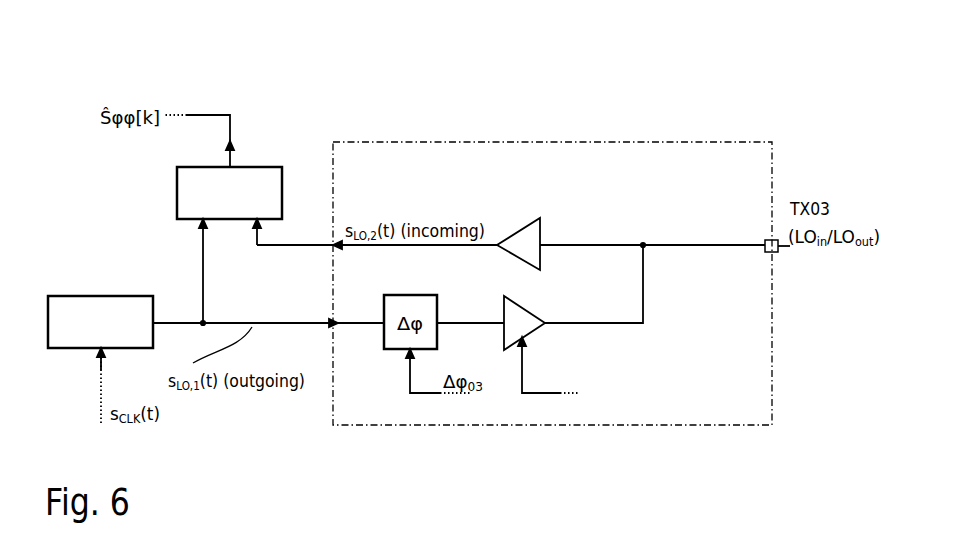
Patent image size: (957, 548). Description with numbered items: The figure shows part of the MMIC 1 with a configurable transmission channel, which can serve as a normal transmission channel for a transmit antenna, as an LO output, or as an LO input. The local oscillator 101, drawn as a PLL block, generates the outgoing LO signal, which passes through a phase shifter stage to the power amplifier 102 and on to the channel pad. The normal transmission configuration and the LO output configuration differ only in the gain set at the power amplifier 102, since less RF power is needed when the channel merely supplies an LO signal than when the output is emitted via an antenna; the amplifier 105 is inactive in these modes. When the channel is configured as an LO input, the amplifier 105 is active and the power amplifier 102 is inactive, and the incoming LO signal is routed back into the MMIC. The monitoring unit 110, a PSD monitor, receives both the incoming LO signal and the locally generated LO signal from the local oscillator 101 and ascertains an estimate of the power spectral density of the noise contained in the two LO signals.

The MMIC 1 is at (354, 72).
The local oscillator 101 is at (128, 296).
The power amplifier 102 is at (528, 322).
The amplifier 105 is at (528, 232).
The monitoring unit 110 is at (177, 197).